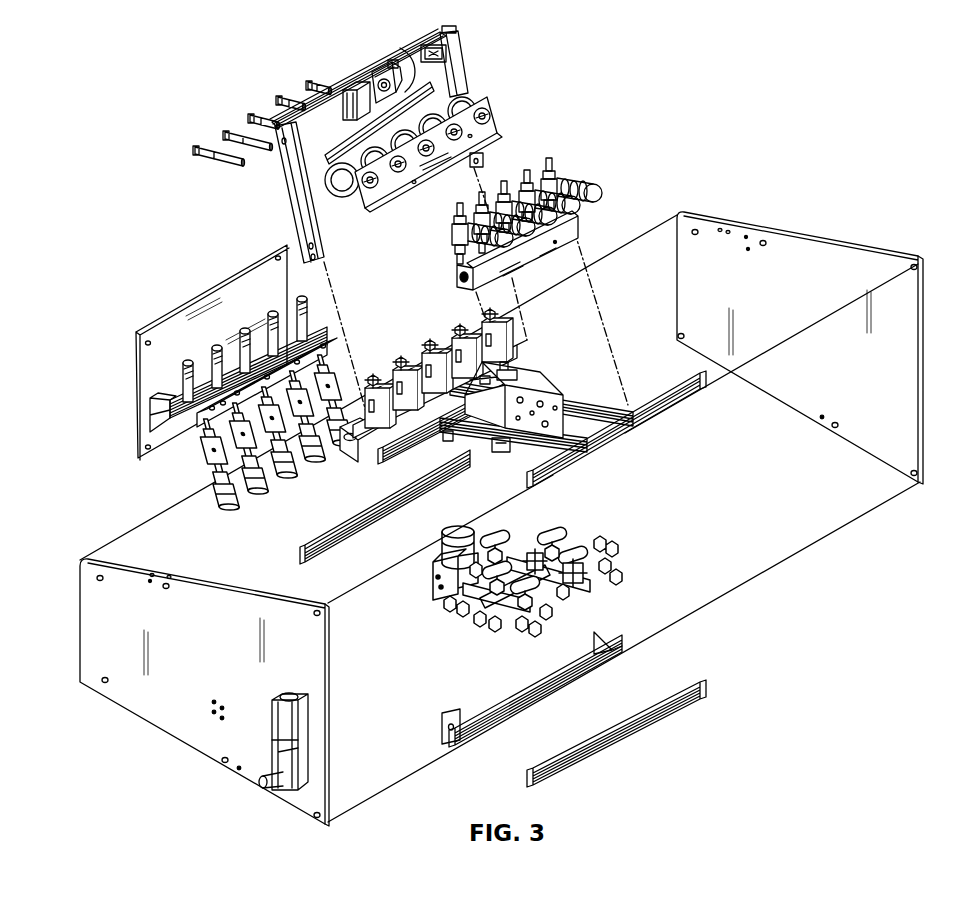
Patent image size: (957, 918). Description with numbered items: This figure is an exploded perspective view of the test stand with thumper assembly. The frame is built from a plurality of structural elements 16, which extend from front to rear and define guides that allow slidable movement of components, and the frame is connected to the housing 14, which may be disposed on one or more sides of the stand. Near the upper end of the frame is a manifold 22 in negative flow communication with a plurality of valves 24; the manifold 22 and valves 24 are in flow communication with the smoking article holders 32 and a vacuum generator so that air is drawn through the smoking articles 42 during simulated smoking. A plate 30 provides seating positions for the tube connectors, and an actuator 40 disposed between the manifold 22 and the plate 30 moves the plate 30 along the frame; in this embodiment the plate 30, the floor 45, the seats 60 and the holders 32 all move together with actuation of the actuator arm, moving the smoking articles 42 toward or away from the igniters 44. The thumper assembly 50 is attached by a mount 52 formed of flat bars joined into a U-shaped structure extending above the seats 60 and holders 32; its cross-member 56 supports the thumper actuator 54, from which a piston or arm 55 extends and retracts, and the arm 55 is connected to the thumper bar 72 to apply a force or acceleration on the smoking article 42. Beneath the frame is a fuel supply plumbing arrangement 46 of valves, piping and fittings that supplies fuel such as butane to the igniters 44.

The housing 14 is at (178, 718).
The structural element 16 is at (183, 432).
The manifold 22 is at (575, 224).
The valve 24 is at (568, 166).
The plate 30 is at (486, 136).
The smoking article holder 32 is at (480, 92).
The actuator 40 is at (531, 342).
The smoking article 42 is at (215, 151).
The igniter 44 is at (297, 293).
The floor 45 is at (365, 452).
The fuel supply plumbing arrangement 46 is at (622, 551).
The thumper assembly 50 is at (468, 60).
The mount 52 is at (462, 28).
The thumper actuator 54 is at (346, 90).
The arm 55 is at (396, 72).
The cross-member 56 is at (382, 74).
The seat 60 is at (378, 385).
The thumper bar 72 is at (325, 172).